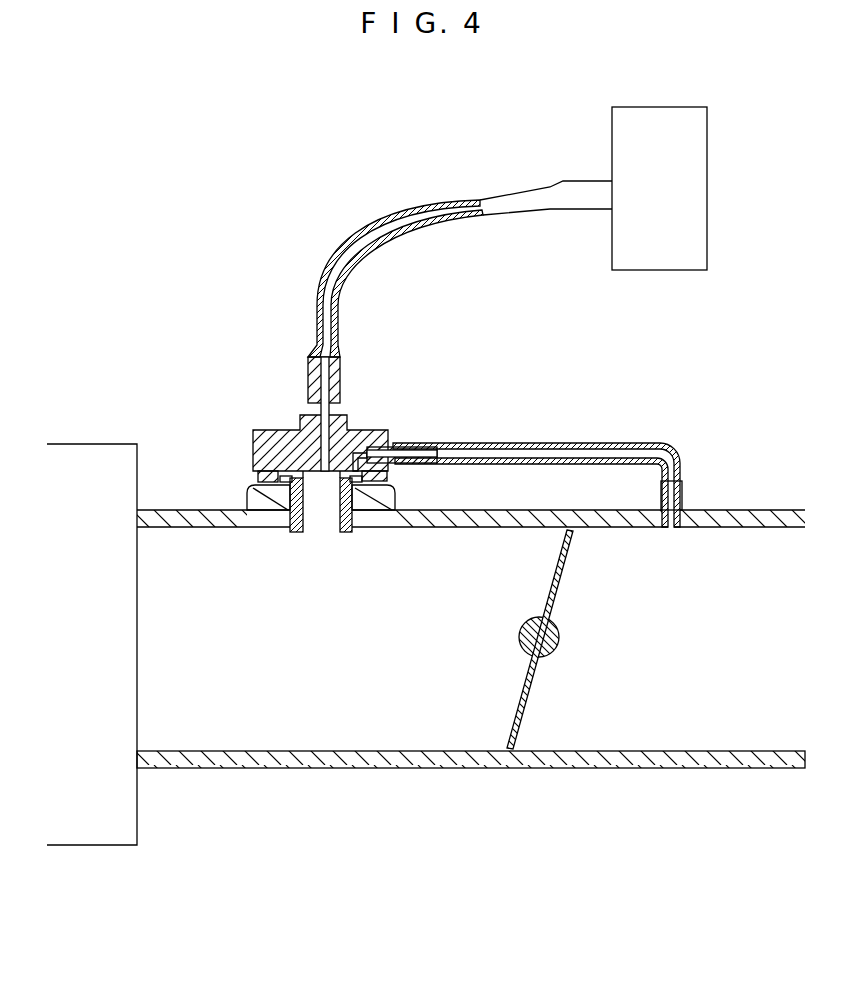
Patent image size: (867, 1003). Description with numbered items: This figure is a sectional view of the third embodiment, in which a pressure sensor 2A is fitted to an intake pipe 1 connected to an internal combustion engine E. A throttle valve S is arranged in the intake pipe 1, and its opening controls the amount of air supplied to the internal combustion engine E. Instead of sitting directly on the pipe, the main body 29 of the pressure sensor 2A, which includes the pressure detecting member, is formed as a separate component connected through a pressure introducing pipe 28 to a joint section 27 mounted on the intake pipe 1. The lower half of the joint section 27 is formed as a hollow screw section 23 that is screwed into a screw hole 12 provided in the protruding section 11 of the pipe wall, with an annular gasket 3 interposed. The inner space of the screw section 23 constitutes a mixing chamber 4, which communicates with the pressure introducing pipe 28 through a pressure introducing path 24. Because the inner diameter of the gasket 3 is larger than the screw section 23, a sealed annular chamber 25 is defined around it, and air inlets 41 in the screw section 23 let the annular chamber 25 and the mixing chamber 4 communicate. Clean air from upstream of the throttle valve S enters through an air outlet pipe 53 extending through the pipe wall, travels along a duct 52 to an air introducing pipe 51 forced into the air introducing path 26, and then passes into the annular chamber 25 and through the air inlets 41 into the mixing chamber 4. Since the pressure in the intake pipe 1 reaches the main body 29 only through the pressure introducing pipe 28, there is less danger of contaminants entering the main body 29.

The intake pipe 1 is at (413, 768).
The pressure sensor 2A is at (571, 173).
The annular gasket 3 is at (283, 468).
The mixing chamber 4 is at (296, 524).
The protruding section 11 is at (262, 498).
The screw hole 12 is at (356, 506).
The screw section 23 is at (298, 520).
The pressure introducing path 24 is at (320, 412).
The annular chamber 25 is at (268, 478).
The air introducing path 26 is at (362, 430).
The joint section 27 is at (355, 402).
The pressure introducing pipe 28 is at (427, 225).
The main body 29 is at (657, 272).
The air inlets 41 is at (306, 477).
The air introducing pipe 51 is at (392, 445).
The duct 52 is at (568, 462).
The air outlet pipe 53 is at (683, 493).
The throttle valve S is at (527, 687).
The internal combustion engine E is at (128, 814).